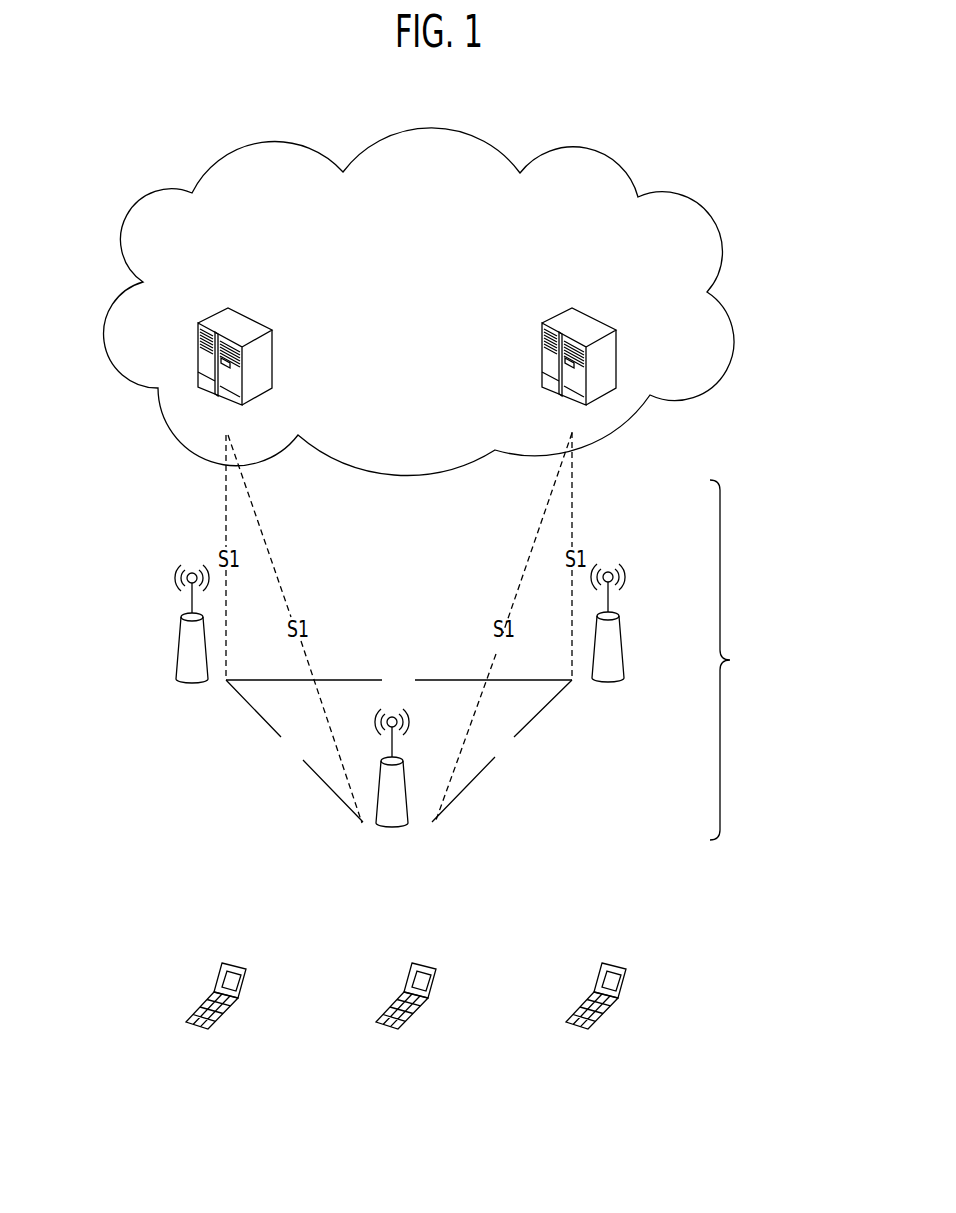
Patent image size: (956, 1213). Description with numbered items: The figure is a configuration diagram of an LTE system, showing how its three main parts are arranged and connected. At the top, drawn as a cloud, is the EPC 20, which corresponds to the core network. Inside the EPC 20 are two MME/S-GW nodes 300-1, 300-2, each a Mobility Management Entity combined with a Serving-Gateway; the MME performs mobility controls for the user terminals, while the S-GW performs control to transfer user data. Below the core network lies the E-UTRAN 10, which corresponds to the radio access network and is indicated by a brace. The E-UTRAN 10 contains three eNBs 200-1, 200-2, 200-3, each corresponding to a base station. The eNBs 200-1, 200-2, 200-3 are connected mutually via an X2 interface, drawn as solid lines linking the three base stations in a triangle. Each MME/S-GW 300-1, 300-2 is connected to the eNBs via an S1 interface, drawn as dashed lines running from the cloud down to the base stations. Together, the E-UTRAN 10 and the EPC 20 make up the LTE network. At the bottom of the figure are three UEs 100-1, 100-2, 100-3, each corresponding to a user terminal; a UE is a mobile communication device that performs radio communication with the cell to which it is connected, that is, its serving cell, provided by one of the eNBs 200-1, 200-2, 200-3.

The EPC (Evolved Packet Core) 20 is at (617, 165).
The MME/S-GW 300-1 is at (257, 320).
The MME/S-GW 300-2 is at (593, 320).
The E-UTRAN (Evolved-UMTS Terrestrial Radio Access Network) 10 is at (526, 660).
The eNB (evolved Node-B) 200-1 is at (177, 648).
The eNB (evolved Node-B) 200-2 is at (408, 800).
The eNB (evolved Node-B) 200-3 is at (643, 620).
The UE (User Equipment) 100-1 is at (235, 962).
The UE (User Equipment) 100-2 is at (425, 962).
The UE (User Equipment) 100-3 is at (615, 962).